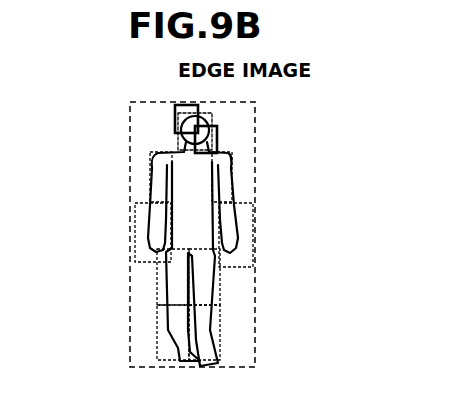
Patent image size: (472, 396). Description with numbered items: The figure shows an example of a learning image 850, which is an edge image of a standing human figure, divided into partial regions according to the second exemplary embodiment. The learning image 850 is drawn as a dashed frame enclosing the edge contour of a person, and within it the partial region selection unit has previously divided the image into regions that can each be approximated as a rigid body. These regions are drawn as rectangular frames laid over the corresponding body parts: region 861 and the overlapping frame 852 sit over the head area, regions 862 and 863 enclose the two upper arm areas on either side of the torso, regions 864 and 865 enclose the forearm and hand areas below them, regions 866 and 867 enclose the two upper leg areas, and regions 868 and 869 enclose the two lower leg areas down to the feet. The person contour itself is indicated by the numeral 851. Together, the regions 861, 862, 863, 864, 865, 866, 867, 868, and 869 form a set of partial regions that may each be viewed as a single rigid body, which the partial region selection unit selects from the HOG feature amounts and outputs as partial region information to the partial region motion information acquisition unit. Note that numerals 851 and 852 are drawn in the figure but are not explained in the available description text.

The learning image 850 is at (153, 102).
The edge image of person (human body contour) 851 is at (178, 121).
The second head detection frame 852 is at (218, 142).
The region 861 is at (200, 117).
The region 862 is at (158, 162).
The region 863 is at (232, 171).
The region 864 is at (135, 212).
The region 865 is at (253, 214).
The region 866 is at (157, 283).
The region 867 is at (220, 287).
The region 868 is at (157, 337).
The region 869 is at (220, 328).